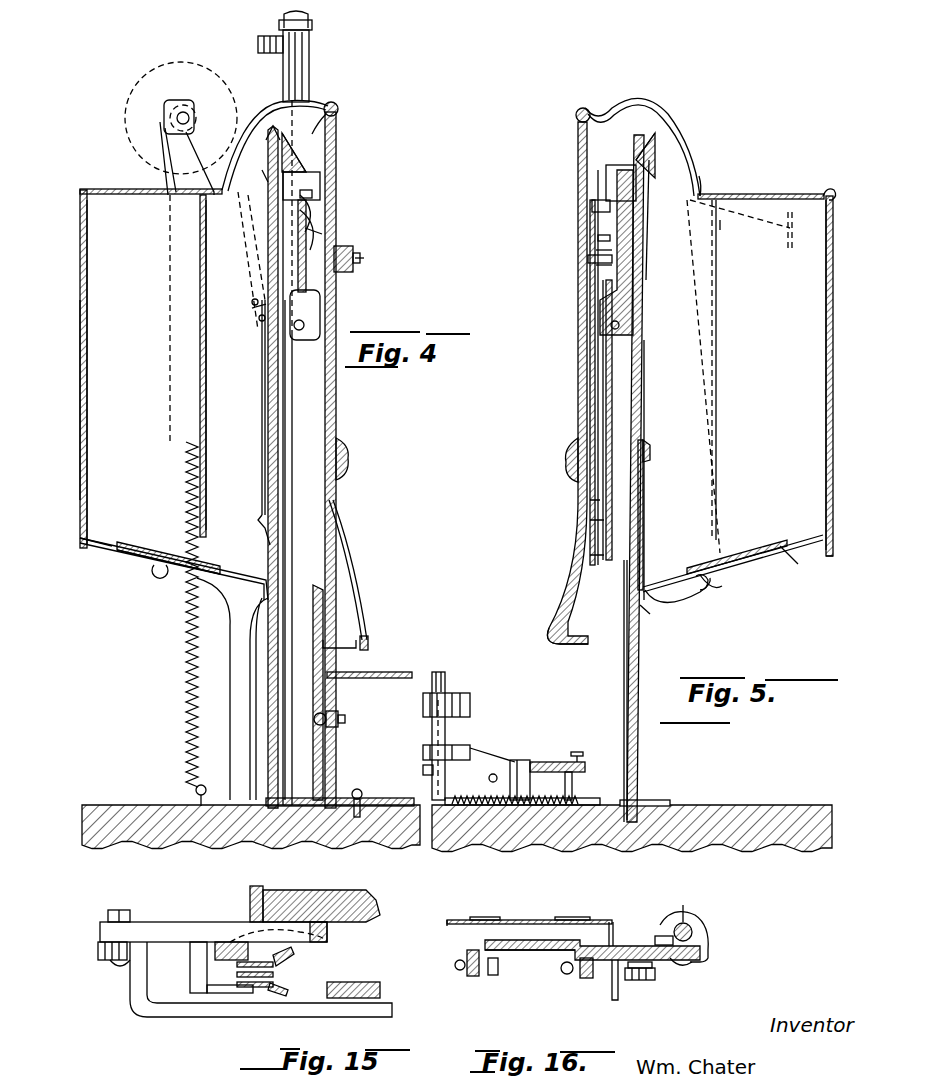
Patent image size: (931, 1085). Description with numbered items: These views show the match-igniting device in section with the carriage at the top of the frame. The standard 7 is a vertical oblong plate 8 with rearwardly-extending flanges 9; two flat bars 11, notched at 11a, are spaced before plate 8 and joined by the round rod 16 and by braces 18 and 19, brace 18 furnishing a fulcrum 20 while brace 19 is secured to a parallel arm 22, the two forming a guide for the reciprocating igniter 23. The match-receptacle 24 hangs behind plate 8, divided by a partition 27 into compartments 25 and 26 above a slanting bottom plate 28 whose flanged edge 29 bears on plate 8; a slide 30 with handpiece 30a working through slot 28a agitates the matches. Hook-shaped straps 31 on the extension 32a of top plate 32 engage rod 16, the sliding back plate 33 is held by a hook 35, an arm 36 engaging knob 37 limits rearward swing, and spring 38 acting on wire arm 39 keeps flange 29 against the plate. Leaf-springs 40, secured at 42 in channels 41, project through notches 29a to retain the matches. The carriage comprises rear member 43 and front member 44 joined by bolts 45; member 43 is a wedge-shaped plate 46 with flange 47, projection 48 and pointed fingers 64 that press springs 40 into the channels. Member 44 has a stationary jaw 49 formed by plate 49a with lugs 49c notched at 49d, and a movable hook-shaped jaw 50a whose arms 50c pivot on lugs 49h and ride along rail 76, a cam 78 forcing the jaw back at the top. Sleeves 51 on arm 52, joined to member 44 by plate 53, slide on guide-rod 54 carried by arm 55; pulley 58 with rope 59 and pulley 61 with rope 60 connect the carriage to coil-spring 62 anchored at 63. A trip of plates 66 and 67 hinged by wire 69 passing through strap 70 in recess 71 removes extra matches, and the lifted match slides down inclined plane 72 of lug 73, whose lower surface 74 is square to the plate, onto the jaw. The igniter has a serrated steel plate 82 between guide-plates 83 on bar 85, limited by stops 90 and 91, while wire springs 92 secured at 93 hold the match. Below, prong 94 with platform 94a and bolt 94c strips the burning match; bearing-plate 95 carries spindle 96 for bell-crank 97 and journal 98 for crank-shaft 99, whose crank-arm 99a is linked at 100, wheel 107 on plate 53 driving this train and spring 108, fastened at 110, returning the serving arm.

In FIG. 4, the frame or standard 7 is at (290, 467).
In FIG. 5, the frame or standard 7 is at (646, 690).
In FIG. 4, the vertical oblong plate 8 is at (285, 570).
In FIG. 5, the vertical oblong plate 8 is at (638, 695).
In FIG. 15, the vertical oblong plate 8 is at (321, 899).
In FIG. 4, the rearwardly-extending sides or flanges 9 is at (210, 186).
In FIG. 5, the rearwardly-extending sides or flanges 9 is at (715, 590).
In FIG. 15, the rearwardly-extending sides or flanges 9 is at (258, 886).
In FIG. 4, the flat bars 11 is at (336, 394).
In FIG. 5, the flat bars 11 is at (578, 328).
In FIG. 15, the flat bars 11 is at (380, 989).
In FIG. 5, the notches 11a is at (556, 642).
In FIG. 4, the round rod 16 is at (336, 104).
In FIG. 5, the round rod 16 is at (583, 108).
In FIG. 4, the upper intermediate transverse brace 18 is at (353, 252).
In FIG. 5, the upper intermediate transverse brace 18 is at (588, 259).
In FIG. 4, the lower intermediate transverse brace 19 is at (348, 458).
In FIG. 5, the lower intermediate transverse brace 19 is at (566, 462).
In FIG. 15, the lower intermediate transverse brace 19 is at (230, 1017).
In FIG. 4, the fulcrum 20 is at (360, 260).
In FIG. 15, the parallel arm 22 is at (188, 922).
In FIG. 5, the reciprocating igniter 23 is at (590, 395).
In FIG. 15, the reciprocating igniter 23 is at (230, 989).
In FIG. 4, the match-receptacle 24 is at (65, 404).
In FIG. 5, the match-receptacle 24 is at (835, 566).
In FIG. 4, the inner compartment 25 is at (225, 365).
In FIG. 5, the inner compartment 25 is at (691, 304).
In FIG. 4, the outer compartment 26 is at (111, 372).
In FIG. 5, the outer compartment 26 is at (788, 375).
In FIG. 4, the partition 27 is at (201, 290).
In FIG. 5, the partition 27 is at (718, 318).
In FIG. 4, the bottom plate 28 is at (232, 578).
In FIG. 5, the bottom plate 28 is at (658, 585).
In FIG. 4, the slot 28a is at (100, 545).
In FIG. 4, the flanged edge 29 is at (263, 597).
In FIG. 5, the flanged edge 29 is at (660, 594).
In FIG. 5, the notches 29a is at (640, 608).
In FIG. 4, the slide 30 is at (152, 544).
In FIG. 5, the slide 30 is at (756, 555).
In FIG. 4, the handpiece 30a is at (168, 578).
In FIG. 4, the hook-shaped straps 31 is at (262, 110).
In FIG. 5, the hook-shaped straps 31 is at (610, 110).
In FIG. 4, the top plate 32 is at (130, 189).
In FIG. 5, the top plate 32 is at (762, 194).
In FIG. 4, the forwardly-ranging extension 32a is at (316, 134).
In FIG. 5, the forwardly-ranging extension 32a is at (680, 116).
In FIG. 4, the back plate 33 is at (87, 333).
In FIG. 5, the back plate 33 is at (826, 350).
In FIG. 5, the hook 35 is at (828, 188).
In FIG. 5, the inwardly-extending arm 36 is at (797, 570).
In FIG. 5, the knob 37 is at (718, 578).
In FIG. 5, the spring 38 is at (737, 216).
In FIG. 5, the wire arm 39 is at (789, 248).
In FIG. 4, the leaf-springs 40 is at (250, 645).
In FIG. 5, the leaf-springs 40 is at (643, 515).
In FIG. 5, the channels 41 is at (644, 428).
In FIG. 5, the securing point 42 is at (650, 452).
In FIG. 16, the rear member of carriage 43 is at (545, 920).
In FIG. 16, the front member of carriage 44 is at (592, 973).
In FIG. 16, the bolts 45 is at (684, 965).
In FIG. 4, the wedge-shaped plate 46 is at (256, 208).
In FIG. 5, the wedge-shaped plate 46 is at (690, 218).
In FIG. 16, the wedge-shaped plate 46 is at (448, 926).
In FIG. 4, the upwardly-extending flange 47 is at (267, 124).
In FIG. 16, the inwardly-bent projection 48 is at (660, 936).
In FIG. 16, the stationary jaw 49 is at (561, 969).
In FIG. 4, the stationary plate 49a is at (316, 232).
In FIG. 16, the stationary plate 49a is at (537, 960).
In FIG. 4, the outwardly-extending lugs 49c is at (312, 196).
In FIG. 5, the outwardly-extending lugs 49c is at (598, 238).
In FIG. 16, the outwardly-extending lugs 49c is at (462, 971).
In FIG. 16, the vertical notches 49d is at (586, 979).
In FIG. 4, the downwardly-extending lugs 49h is at (322, 303).
In FIG. 5, the downwardly-extending lugs 49h is at (600, 300).
In FIG. 4, the hook-shaped jaw 50a is at (312, 190).
In FIG. 5, the hook-shaped jaw 50a is at (596, 250).
In FIG. 4, the downwardly-extending arms 50c is at (322, 234).
In FIG. 5, the downwardly-extending arms 50c is at (596, 265).
In FIG. 16, the downwardly-extending arms 50c is at (611, 930).
In FIG. 4, the sleeves 51 is at (260, 44).
In FIG. 16, the sleeves 51 is at (708, 932).
In FIG. 4, the vertical arm 52 is at (310, 64).
In FIG. 16, the intermediate plate 53 is at (684, 905).
In FIG. 4, the guide-rod 54 is at (298, 19).
In FIG. 4, the arm 55 is at (312, 30).
In FIG. 4, the larger pulley 58 is at (181, 118).
In FIG. 4, the rope 59 is at (239, 261).
In FIG. 4, the rope 60 is at (170, 238).
In FIG. 4, the smaller pulley 61 is at (188, 100).
In FIG. 4, the coil-spring 62 is at (186, 716).
In FIG. 4, the securing point 63 is at (196, 793).
In FIG. 4, the flat pointed fingers 64 is at (256, 312).
In FIG. 5, the flat pointed fingers 64 is at (650, 272).
In FIG. 16, the flat pointed fingers 64 is at (488, 911).
In FIG. 4, the upper plate of trip 66 is at (262, 403).
In FIG. 4, the lower outwardly-curving plate 67 is at (262, 518).
In FIG. 4, the looped wire 69 is at (253, 301).
In FIG. 4, the strap 70 is at (262, 172).
In FIG. 4, the recess 71 is at (300, 150).
In FIG. 4, the inclined plane 72 is at (300, 164).
In FIG. 5, the inclined plane 72 is at (640, 152).
In FIG. 4, the triangular lug 73 is at (300, 156).
In FIG. 5, the triangular lug 73 is at (647, 135).
In FIG. 4, the lower surface of lug 74 is at (320, 182).
In FIG. 5, the lower surface of lug 74 is at (606, 186).
In FIG. 5, the vertical rail 76 is at (598, 368).
In FIG. 15, the vertical rail 76 is at (327, 936).
In FIG. 4, the cam 78 is at (364, 259).
In FIG. 16, the cam 78 is at (618, 1000).
In FIG. 5, the tempered-steel plate 82 is at (606, 430).
In FIG. 15, the tempered-steel plate 82 is at (275, 974).
In FIG. 5, the guide-plates 83 is at (594, 498).
In FIG. 15, the guide-plates 83 is at (291, 950).
In FIG. 15, the bar 85 is at (216, 942).
In FIG. 15, the stop 90 is at (242, 930).
In FIG. 15, the stop 91 is at (190, 980).
In FIG. 4, the wire springs 92 is at (345, 572).
In FIG. 5, the wire springs 92 is at (603, 410).
In FIG. 5, the securing point 93 is at (592, 207).
In FIG. 4, the prong 94 is at (330, 640).
In FIG. 4, the platform 94a is at (410, 672).
In FIG. 4, the bolt 94c is at (345, 720).
In FIG. 5, the bearing-plate 95 is at (589, 797).
In FIG. 5, the spindle 96 is at (522, 762).
In FIG. 5, the bell-crank lever 97 is at (548, 762).
In FIG. 5, the journal 98 is at (470, 703).
In FIG. 5, the crank-shaft 99 is at (445, 678).
In FIG. 5, the crank-arm 99a is at (424, 772).
In FIG. 5, the link 100 is at (489, 779).
In FIG. 16, the antifriction-wheel 107 is at (655, 981).
In FIG. 5, the spring 108 is at (470, 812).
In FIG. 5, the securing point 110 is at (578, 766).